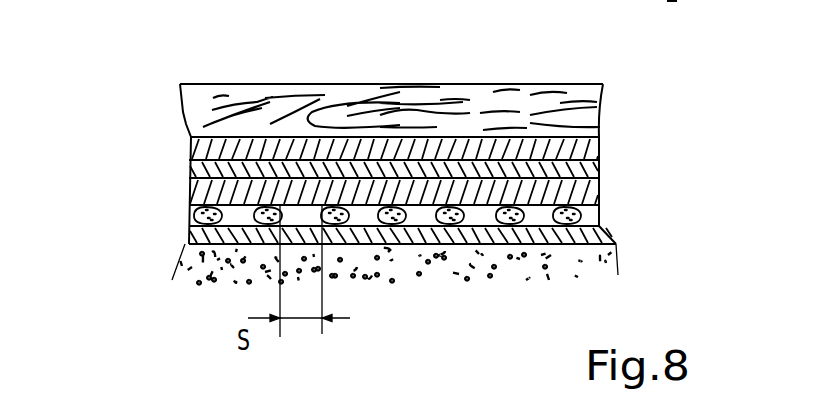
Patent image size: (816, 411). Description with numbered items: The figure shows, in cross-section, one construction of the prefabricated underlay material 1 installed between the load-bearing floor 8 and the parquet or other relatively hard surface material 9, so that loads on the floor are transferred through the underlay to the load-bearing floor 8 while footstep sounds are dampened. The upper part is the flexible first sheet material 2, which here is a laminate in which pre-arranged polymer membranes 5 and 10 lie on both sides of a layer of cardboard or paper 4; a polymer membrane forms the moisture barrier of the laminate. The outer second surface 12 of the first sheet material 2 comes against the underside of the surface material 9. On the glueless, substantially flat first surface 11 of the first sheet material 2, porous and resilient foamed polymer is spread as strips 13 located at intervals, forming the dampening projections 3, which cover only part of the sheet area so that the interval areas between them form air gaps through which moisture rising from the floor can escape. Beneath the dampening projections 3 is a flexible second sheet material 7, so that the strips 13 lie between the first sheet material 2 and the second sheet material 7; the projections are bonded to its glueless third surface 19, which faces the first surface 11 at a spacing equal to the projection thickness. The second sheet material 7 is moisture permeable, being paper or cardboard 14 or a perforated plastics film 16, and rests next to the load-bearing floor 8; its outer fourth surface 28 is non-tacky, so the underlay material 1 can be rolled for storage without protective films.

The underlay material 1 is at (160, 198).
The first sheet material 2 is at (208, 172).
The dampening projections 3 is at (600, 213).
The cardboard or paper 4 is at (600, 158).
The polymer membrane 5 is at (562, 130).
The second sheet material 7 is at (188, 236).
The load-bearing floor 8 is at (572, 253).
The surface material 9 is at (340, 110).
The additional polymer membrane 10 is at (598, 187).
The first surface 11 is at (239, 208).
The second surface 12 is at (476, 135).
The strips 13 is at (340, 218).
The paper or cardboard 14 is at (454, 226).
The perforated plastics film 16 is at (598, 228).
The third surface 19 is at (537, 214).
The fourth surface 28 is at (539, 246).